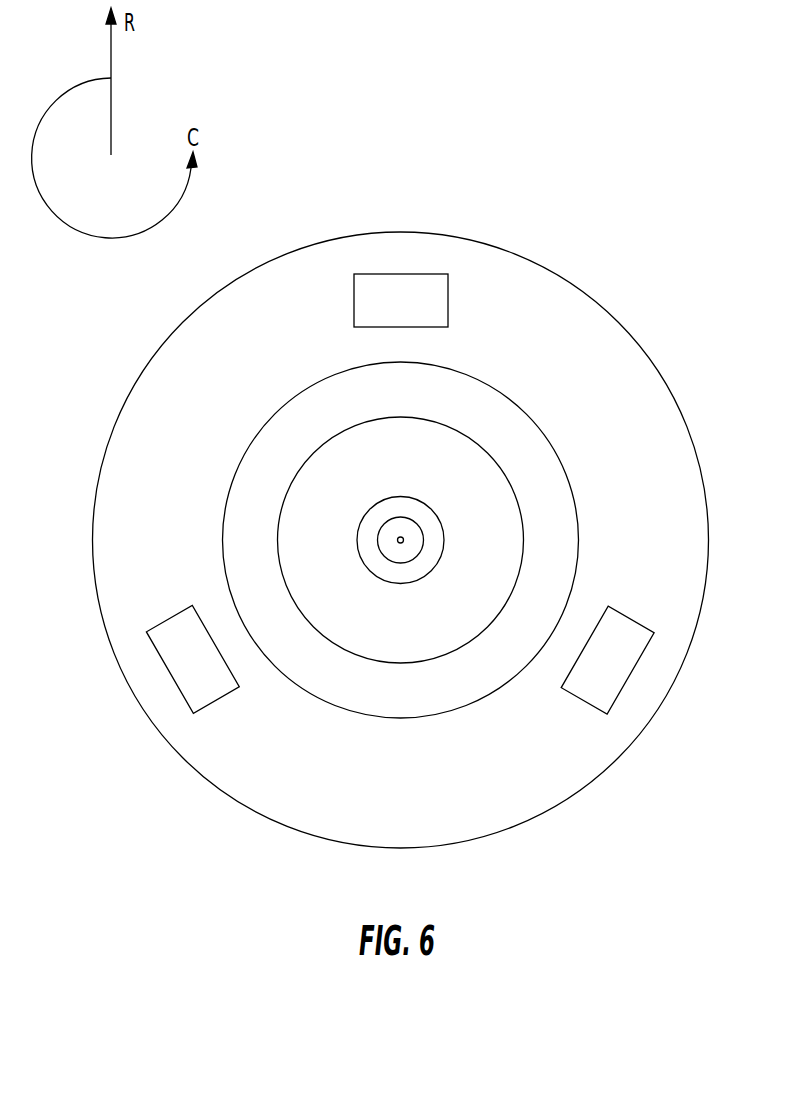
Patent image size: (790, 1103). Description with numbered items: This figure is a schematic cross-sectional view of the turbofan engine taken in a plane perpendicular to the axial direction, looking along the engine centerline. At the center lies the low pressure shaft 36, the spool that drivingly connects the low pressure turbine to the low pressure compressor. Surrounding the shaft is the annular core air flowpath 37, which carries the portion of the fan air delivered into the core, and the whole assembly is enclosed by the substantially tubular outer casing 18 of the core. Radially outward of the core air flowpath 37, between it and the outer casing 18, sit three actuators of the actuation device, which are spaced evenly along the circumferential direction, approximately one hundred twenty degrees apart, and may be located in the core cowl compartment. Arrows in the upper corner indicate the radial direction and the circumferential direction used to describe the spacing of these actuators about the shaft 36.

The outer casing 18 is at (528, 259).
The core air flowpath 37 is at (504, 424).
The low pressure shaft 36 is at (427, 531).